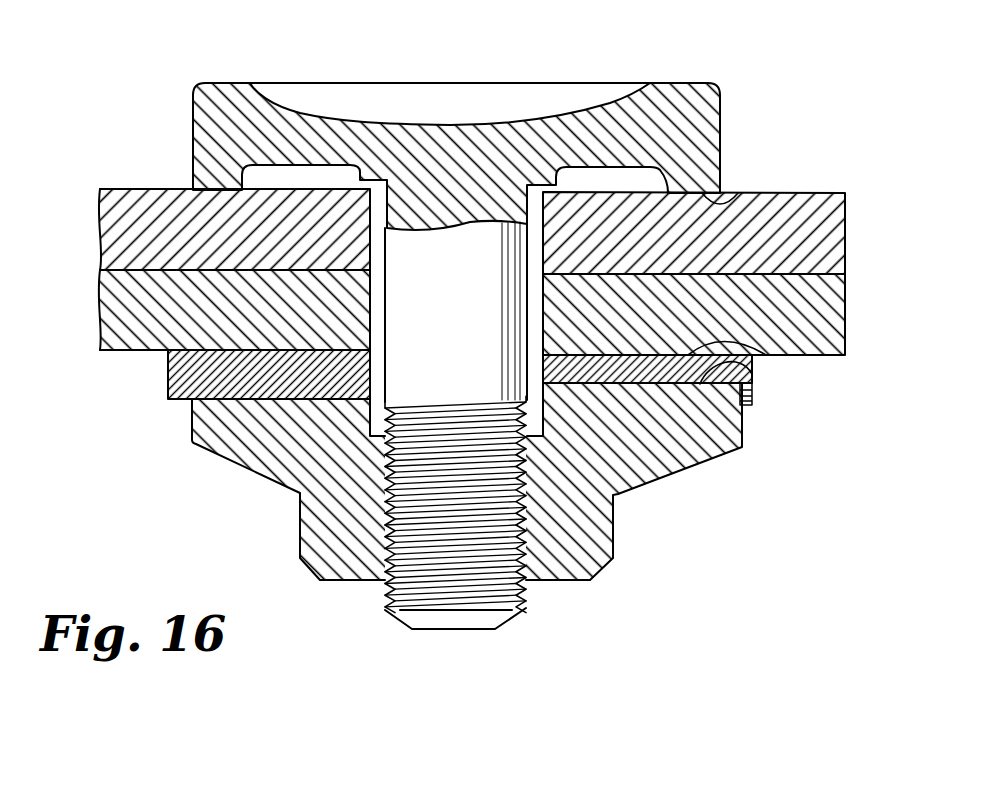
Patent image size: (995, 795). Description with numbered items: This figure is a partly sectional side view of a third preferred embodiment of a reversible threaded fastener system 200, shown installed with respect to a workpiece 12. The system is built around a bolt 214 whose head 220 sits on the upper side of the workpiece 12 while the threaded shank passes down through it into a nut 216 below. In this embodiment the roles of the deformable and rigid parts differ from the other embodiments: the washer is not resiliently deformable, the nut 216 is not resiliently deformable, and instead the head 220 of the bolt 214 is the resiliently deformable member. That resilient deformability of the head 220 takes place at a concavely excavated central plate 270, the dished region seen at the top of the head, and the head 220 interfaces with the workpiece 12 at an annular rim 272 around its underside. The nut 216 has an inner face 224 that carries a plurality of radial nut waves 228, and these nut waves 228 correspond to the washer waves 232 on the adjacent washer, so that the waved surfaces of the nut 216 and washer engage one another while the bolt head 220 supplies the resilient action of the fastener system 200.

The workpiece 12 is at (78, 295).
The reversible threaded fastener system 200 is at (186, 478).
The bolt 214 is at (192, 123).
The nut 216 is at (678, 480).
The head 220 is at (722, 125).
The inner face 224 is at (763, 357).
The nut waves 228 is at (748, 370).
The washer waves 232 is at (690, 356).
The concavely excavated central plate 270 is at (380, 122).
The annular rim 272 is at (745, 195).